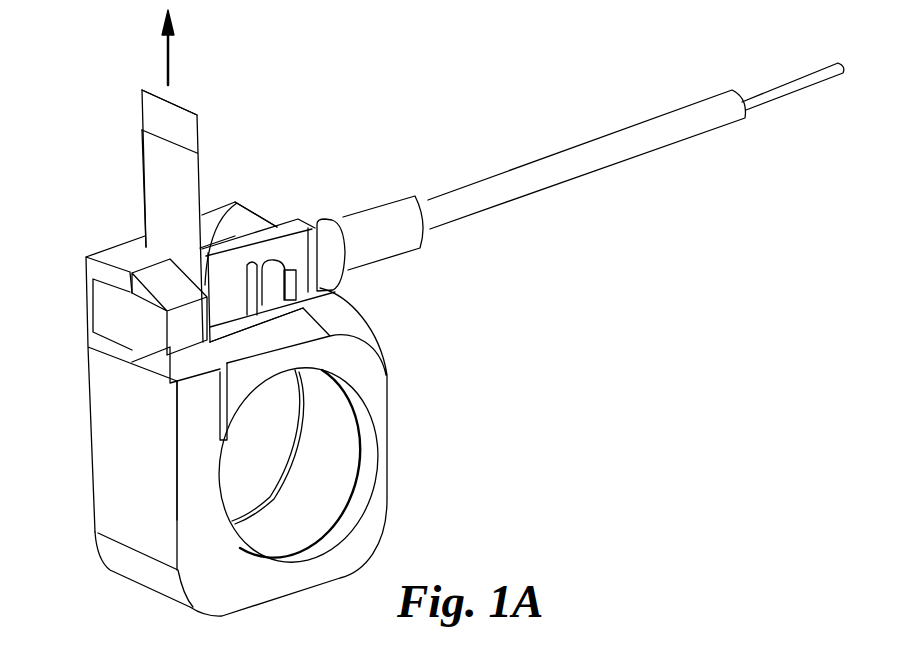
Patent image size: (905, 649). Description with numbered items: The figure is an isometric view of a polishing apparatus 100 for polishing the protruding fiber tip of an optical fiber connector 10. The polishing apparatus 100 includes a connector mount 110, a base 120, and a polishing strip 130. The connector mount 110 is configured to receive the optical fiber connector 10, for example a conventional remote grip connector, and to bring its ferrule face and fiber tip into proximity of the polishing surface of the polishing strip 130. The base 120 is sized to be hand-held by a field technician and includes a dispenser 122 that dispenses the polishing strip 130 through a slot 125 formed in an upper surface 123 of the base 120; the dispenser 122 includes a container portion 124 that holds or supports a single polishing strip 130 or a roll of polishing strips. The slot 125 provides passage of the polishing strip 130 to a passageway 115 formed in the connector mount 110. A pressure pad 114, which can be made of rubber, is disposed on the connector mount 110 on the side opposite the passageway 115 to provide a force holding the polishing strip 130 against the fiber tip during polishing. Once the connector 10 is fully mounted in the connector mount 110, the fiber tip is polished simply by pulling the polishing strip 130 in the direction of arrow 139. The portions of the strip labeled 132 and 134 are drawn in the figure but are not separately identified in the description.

The optical fiber connector 10 is at (313, 217).
The polishing apparatus 100 is at (478, 96).
The connector mount 110 is at (228, 208).
The pressure pad 114 is at (118, 311).
The passageway 115 is at (245, 214).
The base 120 is at (378, 525).
The dispenser 122 is at (248, 372).
The upper surface 123 is at (282, 318).
The container portion 124 is at (342, 433).
The slot 125 is at (220, 410).
The polishing strip 130 is at (141, 109).
The tab top portion 132 is at (177, 112).
The tab body 134 is at (157, 180).
The arrow 139 is at (167, 53).